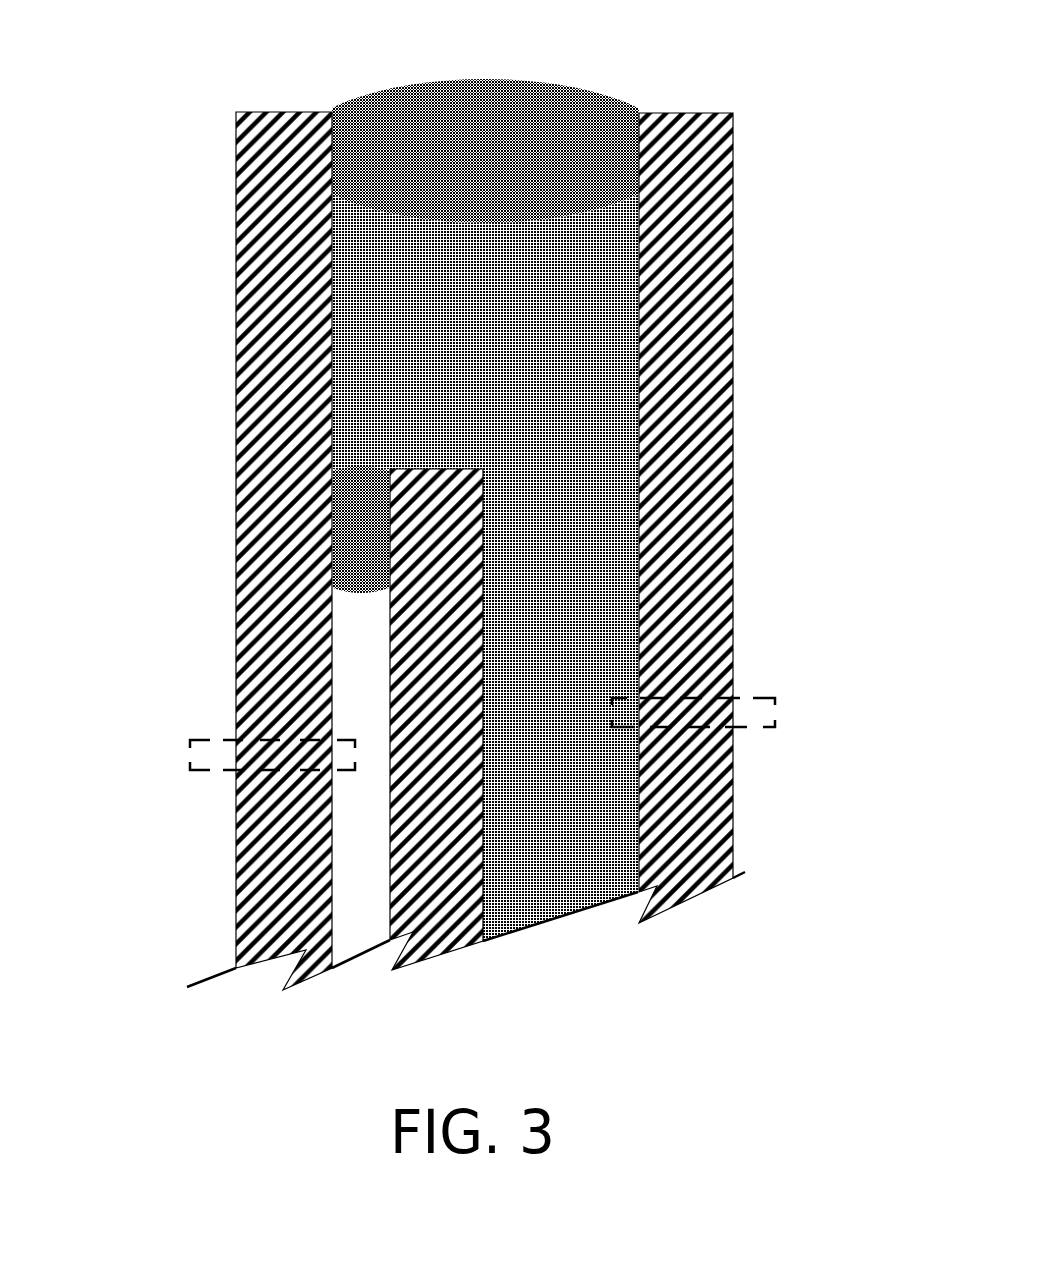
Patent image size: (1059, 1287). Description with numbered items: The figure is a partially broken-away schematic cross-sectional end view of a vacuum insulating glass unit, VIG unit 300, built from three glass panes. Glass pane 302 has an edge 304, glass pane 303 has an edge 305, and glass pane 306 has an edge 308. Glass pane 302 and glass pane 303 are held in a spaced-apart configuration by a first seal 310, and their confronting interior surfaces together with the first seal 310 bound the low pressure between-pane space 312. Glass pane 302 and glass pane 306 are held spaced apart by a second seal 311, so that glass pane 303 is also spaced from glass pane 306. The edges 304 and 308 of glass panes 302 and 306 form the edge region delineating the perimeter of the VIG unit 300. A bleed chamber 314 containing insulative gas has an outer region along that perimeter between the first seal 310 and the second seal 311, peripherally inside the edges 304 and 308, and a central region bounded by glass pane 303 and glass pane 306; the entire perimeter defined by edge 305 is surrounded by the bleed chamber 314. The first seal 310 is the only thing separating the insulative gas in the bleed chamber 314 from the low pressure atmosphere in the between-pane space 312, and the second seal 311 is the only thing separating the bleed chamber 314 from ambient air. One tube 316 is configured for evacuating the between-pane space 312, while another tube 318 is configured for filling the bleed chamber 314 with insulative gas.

The VIG unit 300 is at (463, 509).
The glass pane 302 is at (478, 521).
The glass pane 303 is at (418, 806).
The edge 304 is at (276, 112).
The edge 305 is at (267, 685).
The glass pane 306 is at (712, 603).
The edge 308 is at (743, 498).
The first seal 310 is at (362, 513).
The second seal 311 is at (483, 108).
The between-pane space 312 is at (363, 694).
The bleed chamber 314 is at (557, 484).
The tube 316 is at (190, 753).
The tube 318 is at (773, 712).